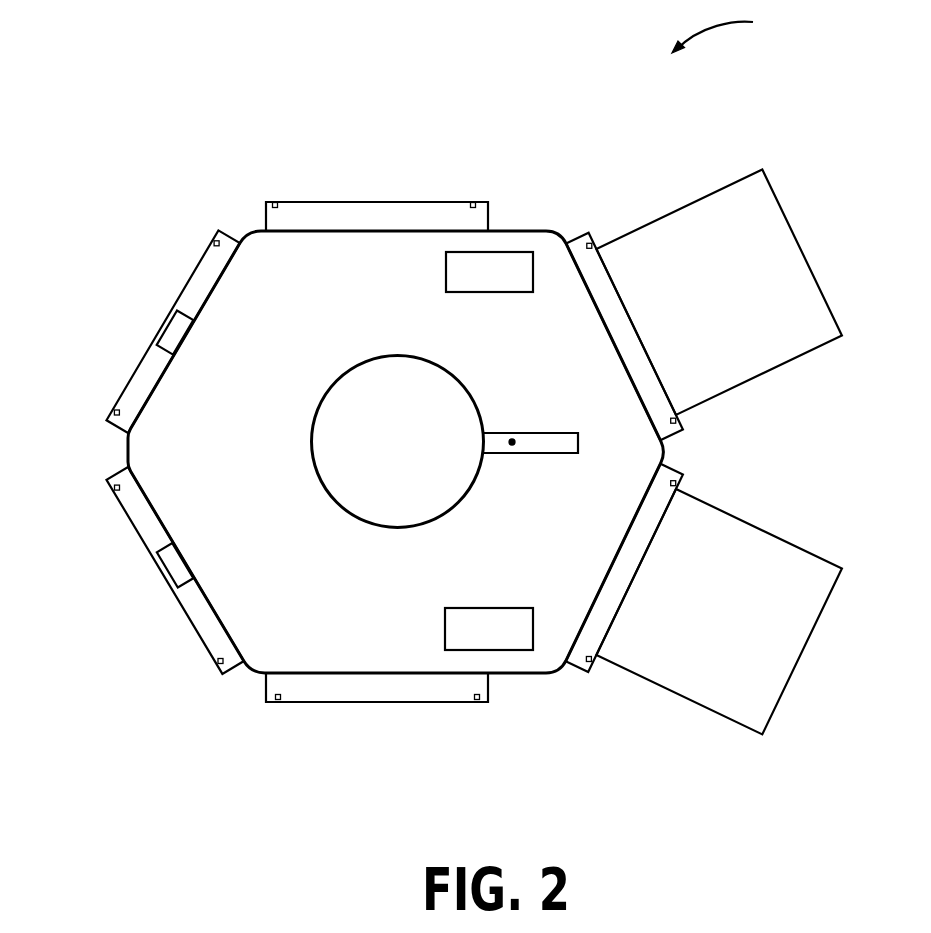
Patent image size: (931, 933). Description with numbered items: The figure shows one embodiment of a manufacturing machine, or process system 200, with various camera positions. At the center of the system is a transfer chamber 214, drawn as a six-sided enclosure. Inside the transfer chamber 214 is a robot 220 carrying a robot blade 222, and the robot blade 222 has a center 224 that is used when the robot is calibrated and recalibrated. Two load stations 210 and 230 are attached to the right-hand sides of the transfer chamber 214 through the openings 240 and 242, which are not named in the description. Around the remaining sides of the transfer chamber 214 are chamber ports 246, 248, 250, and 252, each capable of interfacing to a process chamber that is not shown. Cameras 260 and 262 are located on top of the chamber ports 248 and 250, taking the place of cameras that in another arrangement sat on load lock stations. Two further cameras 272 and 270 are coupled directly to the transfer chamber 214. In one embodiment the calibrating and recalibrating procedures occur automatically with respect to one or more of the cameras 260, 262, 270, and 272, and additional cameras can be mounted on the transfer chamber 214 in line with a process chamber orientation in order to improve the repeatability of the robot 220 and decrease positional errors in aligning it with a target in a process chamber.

The process system 200 is at (735, 22).
The load station 210 is at (742, 172).
The transfer chamber 214 is at (312, 600).
The robot 220 is at (420, 456).
The robot blade 222 is at (530, 432).
The center 224 is at (512, 444).
The load station 230 is at (803, 548).
The slit valve 240 is at (572, 233).
The slit valve 242 is at (572, 670).
The chamber port 246 is at (266, 685).
The chamber port 248 is at (127, 470).
The chamber port 250 is at (124, 435).
The chamber port 252 is at (330, 202).
The camera 260 is at (172, 332).
The camera 262 is at (175, 565).
The camera 270 is at (504, 644).
The camera 272 is at (507, 286).